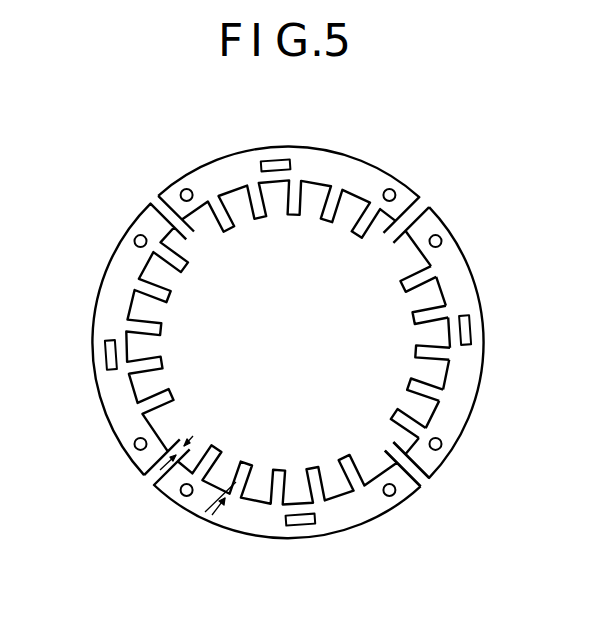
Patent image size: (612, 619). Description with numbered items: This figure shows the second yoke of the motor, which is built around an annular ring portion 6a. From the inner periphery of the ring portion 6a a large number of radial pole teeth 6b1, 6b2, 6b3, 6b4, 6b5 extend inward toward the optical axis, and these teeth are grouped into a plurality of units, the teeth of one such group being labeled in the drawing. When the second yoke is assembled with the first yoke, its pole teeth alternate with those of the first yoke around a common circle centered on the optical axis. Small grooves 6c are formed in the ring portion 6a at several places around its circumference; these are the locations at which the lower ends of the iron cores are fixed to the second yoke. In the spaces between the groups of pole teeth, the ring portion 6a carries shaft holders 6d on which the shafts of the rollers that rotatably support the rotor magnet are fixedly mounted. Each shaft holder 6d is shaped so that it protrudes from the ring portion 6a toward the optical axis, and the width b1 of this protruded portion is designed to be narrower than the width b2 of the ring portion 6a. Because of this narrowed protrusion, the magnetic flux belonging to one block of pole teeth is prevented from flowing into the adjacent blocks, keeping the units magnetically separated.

The ring portion 6a is at (362, 508).
The radial pole tooth 6b1 is at (402, 284).
The radial pole tooth 6b2 is at (414, 315).
The radial pole tooth 6b3 is at (416, 350).
The radial pole tooth 6b4 is at (411, 382).
The radial pole tooth 6b5 is at (396, 412).
The groove 6c is at (275, 162).
The shaft holder 6d is at (394, 453).
The width of protruded portion b1 is at (193, 436).
The width of ring portion b2 is at (212, 515).